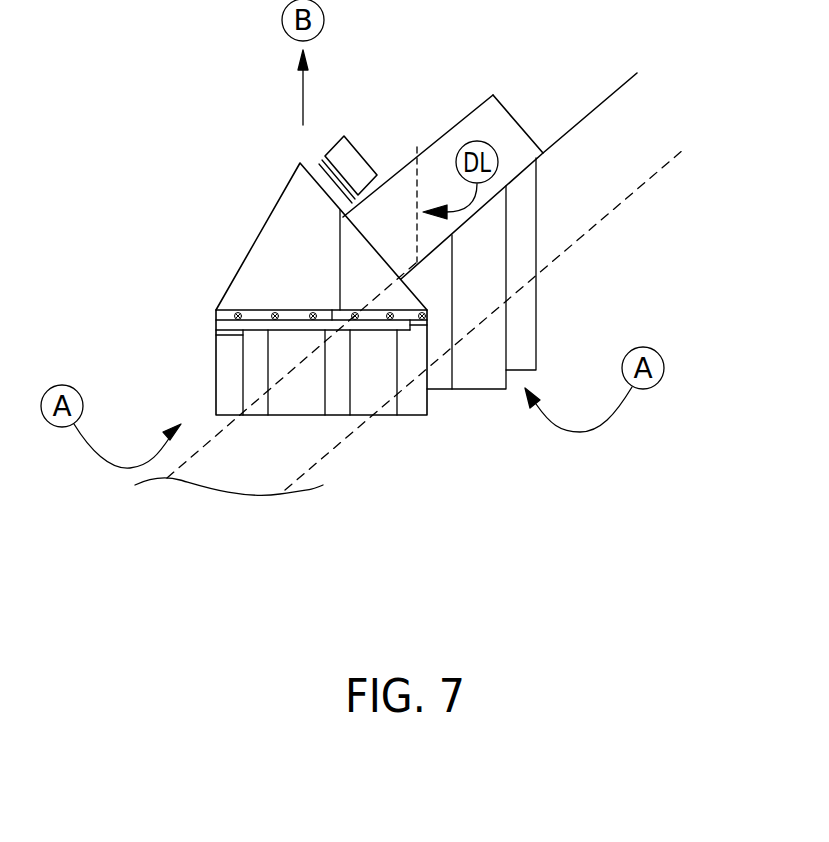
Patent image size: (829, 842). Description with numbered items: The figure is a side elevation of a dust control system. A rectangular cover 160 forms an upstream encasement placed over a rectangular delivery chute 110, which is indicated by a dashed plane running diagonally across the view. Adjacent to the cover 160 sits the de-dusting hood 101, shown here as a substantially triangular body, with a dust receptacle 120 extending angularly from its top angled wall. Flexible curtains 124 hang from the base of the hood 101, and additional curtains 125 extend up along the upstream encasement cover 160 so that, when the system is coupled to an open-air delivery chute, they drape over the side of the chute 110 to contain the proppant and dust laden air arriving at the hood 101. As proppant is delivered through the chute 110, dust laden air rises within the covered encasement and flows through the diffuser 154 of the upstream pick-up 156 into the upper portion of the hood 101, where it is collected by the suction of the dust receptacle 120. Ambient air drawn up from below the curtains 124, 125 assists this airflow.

The de-dusting hood 101 is at (257, 260).
The delivery chute 110 is at (675, 157).
The dust receptacle 120 is at (323, 167).
The flexible curtain 124 is at (316, 388).
The additional curtain 125 is at (522, 190).
The diffuser 154 is at (413, 238).
The upstream pick-up 156 is at (397, 173).
The cover 160 is at (457, 120).